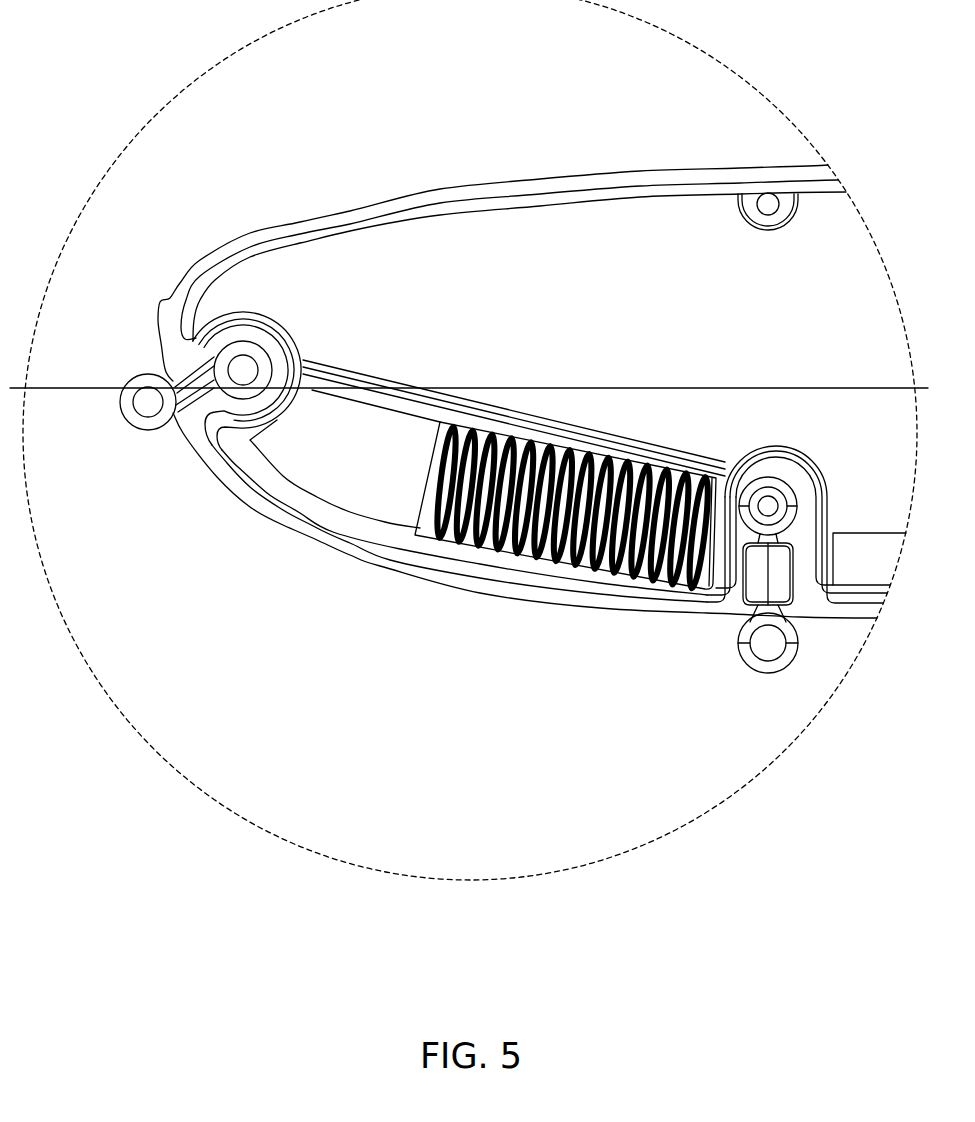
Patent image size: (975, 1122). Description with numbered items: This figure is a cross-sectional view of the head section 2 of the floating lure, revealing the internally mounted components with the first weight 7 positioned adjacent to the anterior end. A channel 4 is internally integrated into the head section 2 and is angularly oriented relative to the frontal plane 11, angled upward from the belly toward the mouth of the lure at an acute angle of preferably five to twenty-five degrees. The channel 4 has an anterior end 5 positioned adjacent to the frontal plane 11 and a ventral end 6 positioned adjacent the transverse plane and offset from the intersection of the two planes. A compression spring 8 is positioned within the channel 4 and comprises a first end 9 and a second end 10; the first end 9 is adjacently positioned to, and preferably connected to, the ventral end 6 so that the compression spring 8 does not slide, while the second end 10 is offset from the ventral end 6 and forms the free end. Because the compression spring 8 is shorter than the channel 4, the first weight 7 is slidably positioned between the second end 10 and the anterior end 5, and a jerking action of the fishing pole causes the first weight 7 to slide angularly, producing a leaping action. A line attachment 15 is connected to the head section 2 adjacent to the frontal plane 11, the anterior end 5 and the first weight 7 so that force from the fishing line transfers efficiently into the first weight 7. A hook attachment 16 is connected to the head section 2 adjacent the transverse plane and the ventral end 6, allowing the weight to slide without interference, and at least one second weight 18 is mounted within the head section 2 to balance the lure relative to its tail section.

The head section 2 is at (465, 90).
The channel 4 is at (547, 562).
The anterior end 5 is at (282, 405).
The ventral end 6 is at (724, 510).
The first weight 7 is at (345, 497).
The compression spring 8 is at (590, 453).
The first end 9 is at (693, 587).
The second end 10 is at (422, 533).
The frontal plane 11 is at (688, 388).
The line attachment 15 is at (147, 430).
The hook attachment 16 is at (762, 673).
The second weight 18 is at (870, 540).